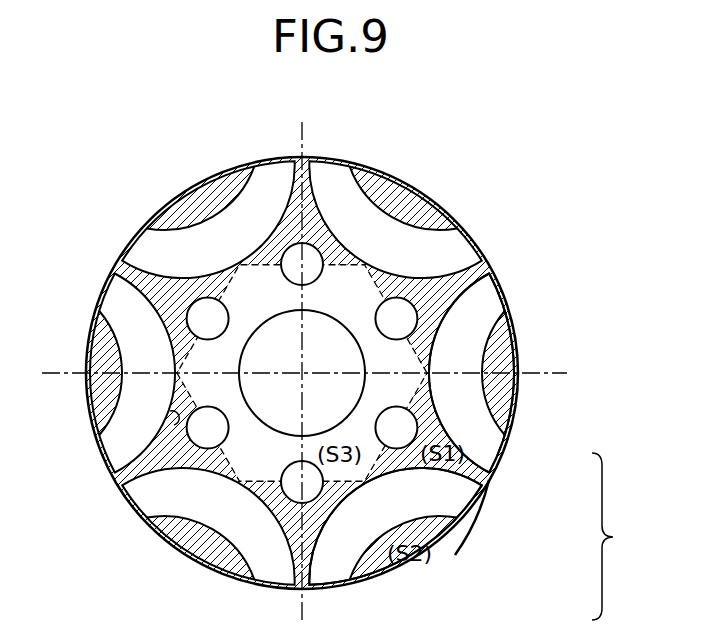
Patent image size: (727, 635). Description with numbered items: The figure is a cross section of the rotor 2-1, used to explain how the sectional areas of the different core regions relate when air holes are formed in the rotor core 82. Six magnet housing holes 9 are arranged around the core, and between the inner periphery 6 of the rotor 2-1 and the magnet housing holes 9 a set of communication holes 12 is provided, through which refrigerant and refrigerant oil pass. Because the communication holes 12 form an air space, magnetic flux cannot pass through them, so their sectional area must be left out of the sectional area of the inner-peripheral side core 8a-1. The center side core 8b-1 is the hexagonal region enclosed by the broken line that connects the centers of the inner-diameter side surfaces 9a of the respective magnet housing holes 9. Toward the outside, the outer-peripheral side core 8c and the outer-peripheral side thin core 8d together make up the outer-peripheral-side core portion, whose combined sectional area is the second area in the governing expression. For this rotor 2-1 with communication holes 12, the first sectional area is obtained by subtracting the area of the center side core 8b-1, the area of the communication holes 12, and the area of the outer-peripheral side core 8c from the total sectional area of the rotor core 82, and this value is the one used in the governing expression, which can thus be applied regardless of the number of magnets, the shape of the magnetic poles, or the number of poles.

The rotor 2-1 is at (508, 120).
The inner periphery 6 is at (263, 428).
The magnet housing hole 9 is at (113, 302).
The inner-diameter side surface 9a is at (168, 421).
The communication hole 12 is at (205, 437).
The inner-peripheral side core 8a-1 is at (480, 472).
The center side core 8b-1 is at (467, 457).
The outer-peripheral side core 8c is at (437, 530).
The outer-peripheral side thin core 8d is at (480, 500).
The rotor core 82 is at (618, 536).